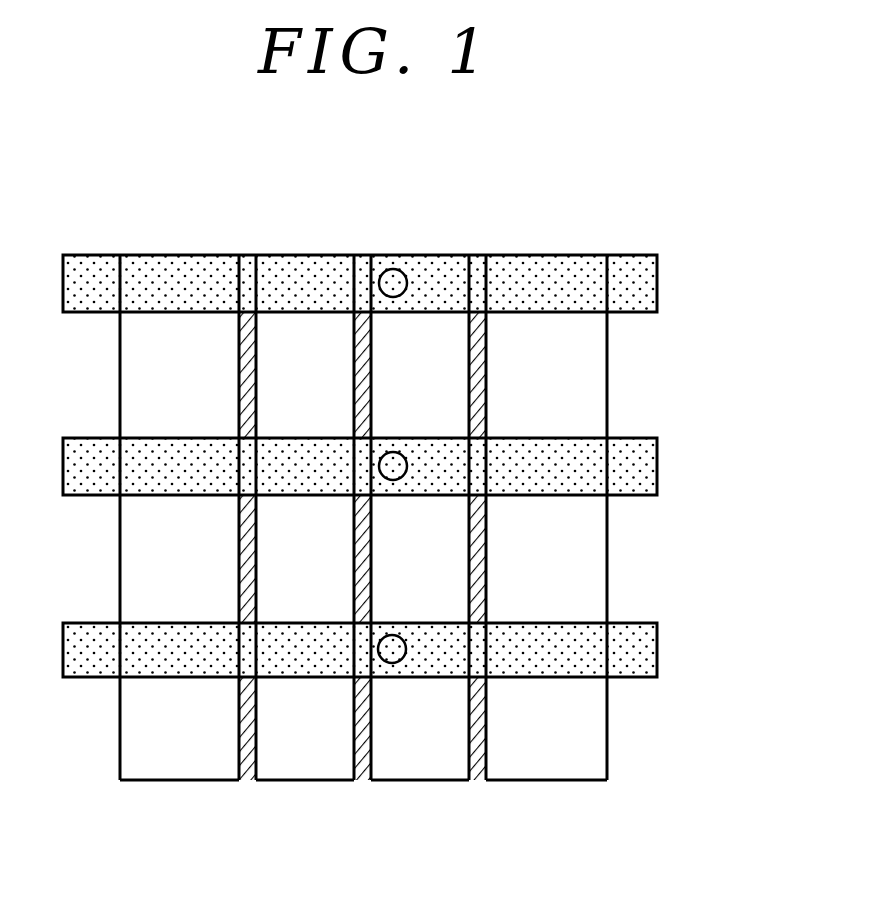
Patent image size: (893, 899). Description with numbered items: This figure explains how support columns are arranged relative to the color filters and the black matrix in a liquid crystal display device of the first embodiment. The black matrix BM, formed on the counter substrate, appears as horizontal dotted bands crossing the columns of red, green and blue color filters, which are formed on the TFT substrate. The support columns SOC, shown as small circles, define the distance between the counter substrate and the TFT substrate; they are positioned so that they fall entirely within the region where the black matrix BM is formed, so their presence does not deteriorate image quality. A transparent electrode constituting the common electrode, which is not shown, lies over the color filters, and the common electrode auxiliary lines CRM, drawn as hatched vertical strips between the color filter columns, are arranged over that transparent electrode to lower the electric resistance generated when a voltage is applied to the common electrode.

The black matrix BM is at (637, 649).
The common electrode auxiliary lines CRM is at (358, 350).
The support columns SOC is at (404, 455).